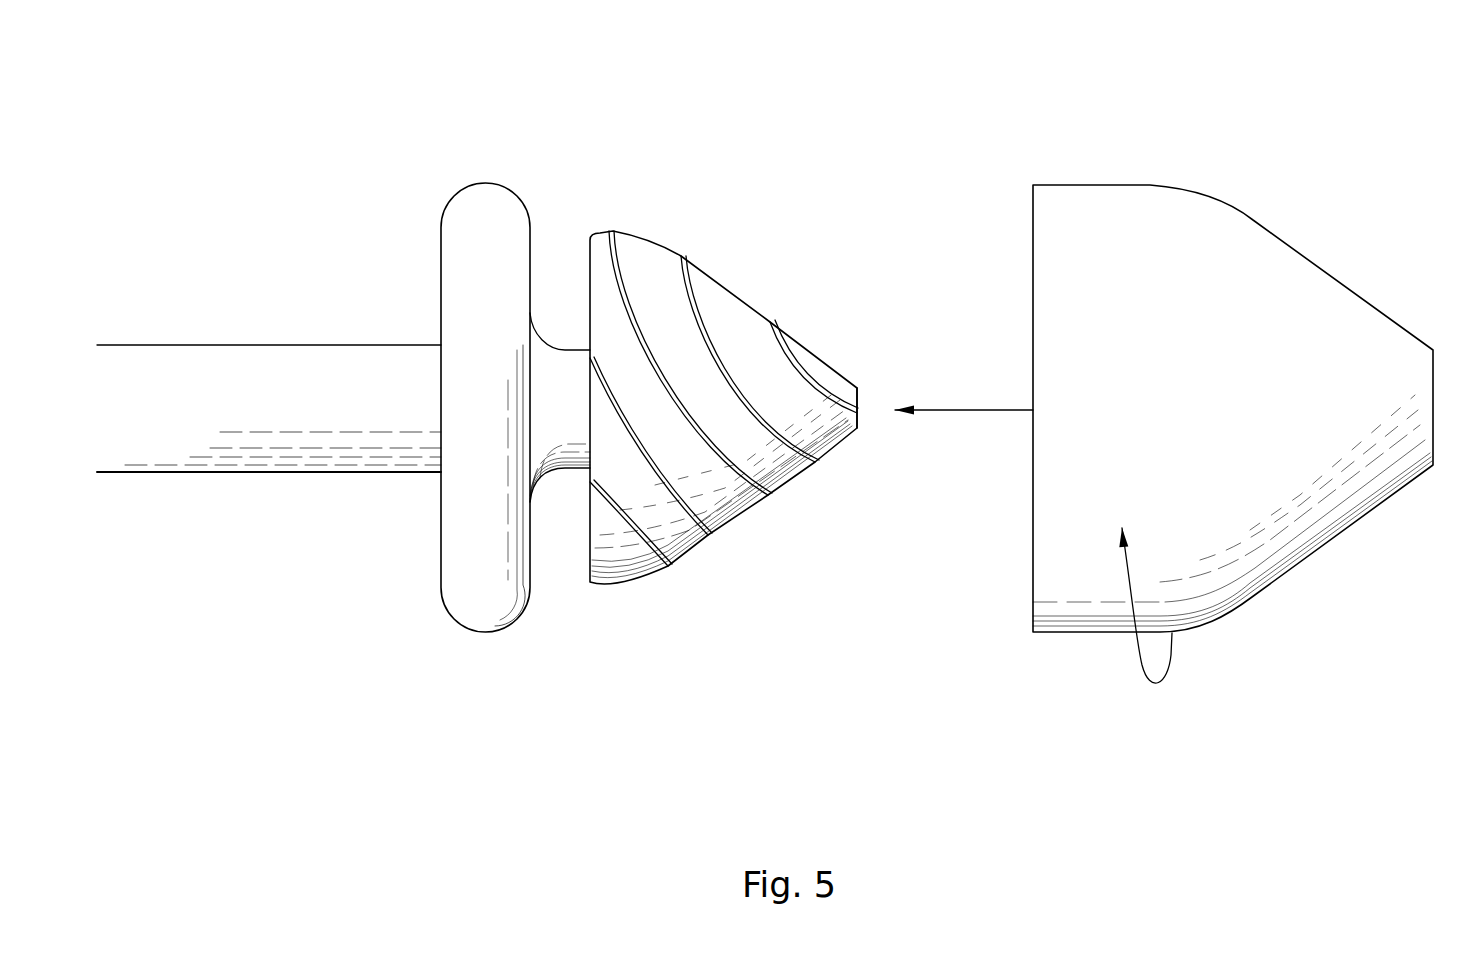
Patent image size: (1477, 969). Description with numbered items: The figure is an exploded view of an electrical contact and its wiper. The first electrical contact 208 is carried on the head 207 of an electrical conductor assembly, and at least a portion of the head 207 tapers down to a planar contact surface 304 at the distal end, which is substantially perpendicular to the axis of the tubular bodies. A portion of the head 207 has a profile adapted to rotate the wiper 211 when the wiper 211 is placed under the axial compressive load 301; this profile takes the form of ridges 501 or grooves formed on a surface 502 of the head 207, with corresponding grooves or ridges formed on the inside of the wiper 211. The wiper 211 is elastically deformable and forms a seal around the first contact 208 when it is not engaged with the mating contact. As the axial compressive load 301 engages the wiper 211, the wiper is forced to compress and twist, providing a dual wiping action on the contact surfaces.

The first electrical contact 208 is at (345, 170).
The head 207 is at (634, 603).
The ridges 501 is at (722, 343).
The surface 502 is at (717, 502).
The planar contact surface 304 is at (859, 391).
The axial compressive load 301 is at (957, 410).
The wiper 211 is at (1348, 590).